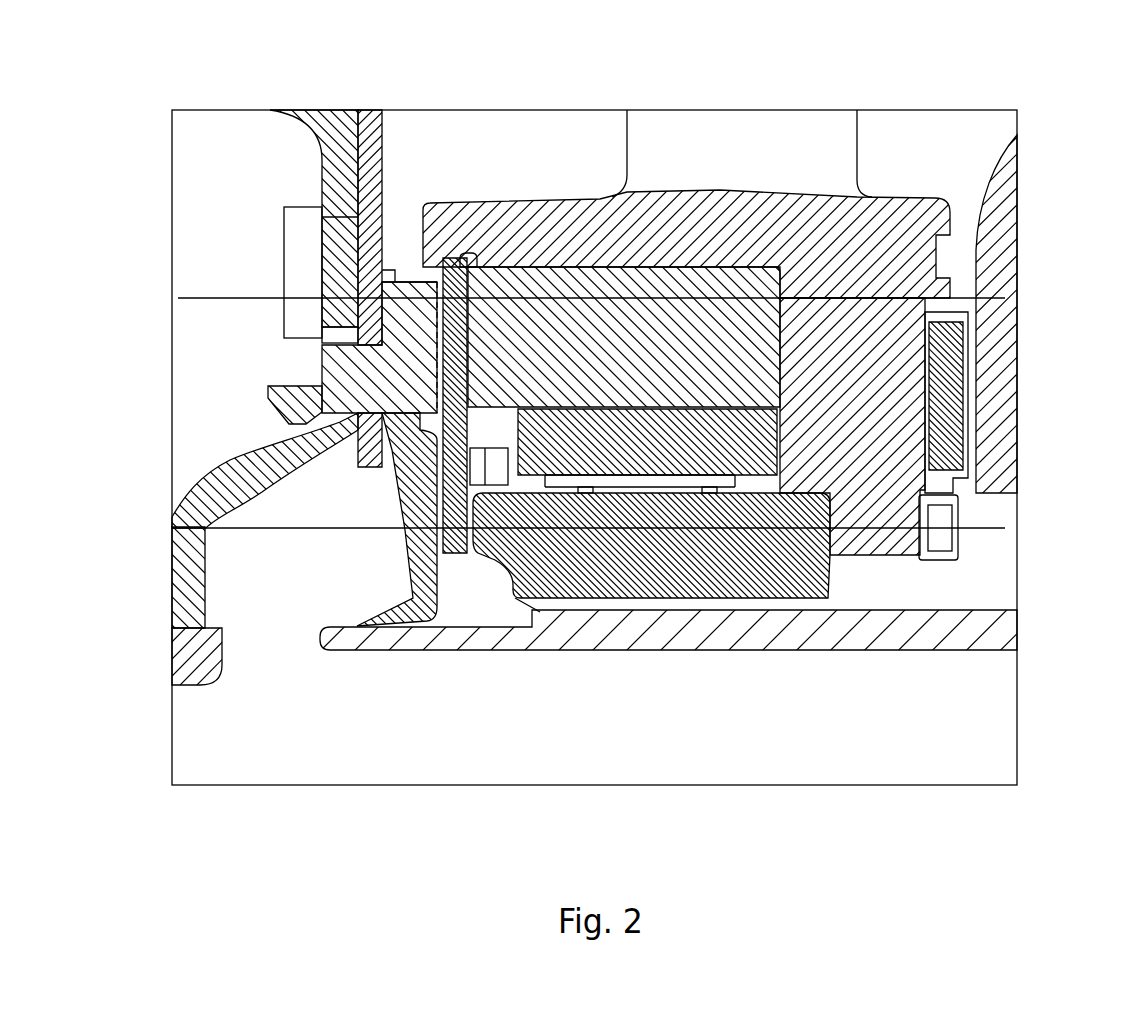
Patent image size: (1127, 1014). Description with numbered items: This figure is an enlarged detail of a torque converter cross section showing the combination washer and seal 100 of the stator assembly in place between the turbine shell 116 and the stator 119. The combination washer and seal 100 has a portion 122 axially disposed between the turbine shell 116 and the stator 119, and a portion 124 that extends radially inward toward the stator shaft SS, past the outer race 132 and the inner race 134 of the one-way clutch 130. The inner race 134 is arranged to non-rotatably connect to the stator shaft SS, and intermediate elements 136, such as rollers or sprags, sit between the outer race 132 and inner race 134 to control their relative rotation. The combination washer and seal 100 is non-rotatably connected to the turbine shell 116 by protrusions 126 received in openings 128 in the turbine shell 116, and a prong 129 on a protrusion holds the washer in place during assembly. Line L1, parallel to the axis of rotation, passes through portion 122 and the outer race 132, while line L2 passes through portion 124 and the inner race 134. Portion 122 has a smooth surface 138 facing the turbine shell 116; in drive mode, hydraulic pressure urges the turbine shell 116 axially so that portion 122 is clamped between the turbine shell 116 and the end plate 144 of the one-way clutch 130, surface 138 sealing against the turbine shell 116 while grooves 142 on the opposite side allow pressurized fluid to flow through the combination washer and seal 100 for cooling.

The combination washer and seal 100 is at (410, 268).
The turbine shell 116 is at (372, 112).
The stator 119 is at (745, 203).
The portion 122 is at (338, 315).
The portion 124 is at (440, 583).
The protrusions 126 is at (320, 370).
The openings 128 is at (337, 333).
The prong 129 is at (282, 410).
The one-way clutch 130 is at (818, 413).
The outer race 132 is at (675, 265).
The inner race 134 is at (838, 570).
The intermediate elements 136 is at (820, 437).
The surface 138 is at (370, 288).
The grooves 142 is at (430, 255).
The end plate 144 is at (472, 263).
The line L1 is at (207, 298).
The line L2 is at (247, 527).
The stator shaft SS is at (1000, 628).